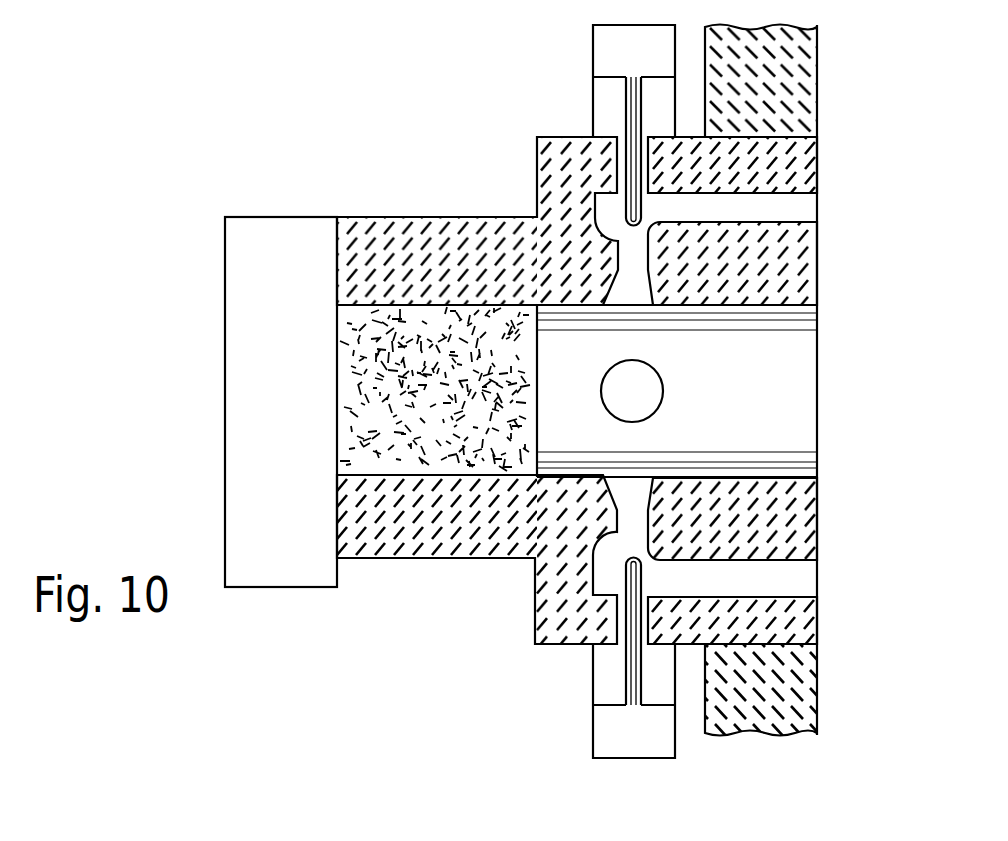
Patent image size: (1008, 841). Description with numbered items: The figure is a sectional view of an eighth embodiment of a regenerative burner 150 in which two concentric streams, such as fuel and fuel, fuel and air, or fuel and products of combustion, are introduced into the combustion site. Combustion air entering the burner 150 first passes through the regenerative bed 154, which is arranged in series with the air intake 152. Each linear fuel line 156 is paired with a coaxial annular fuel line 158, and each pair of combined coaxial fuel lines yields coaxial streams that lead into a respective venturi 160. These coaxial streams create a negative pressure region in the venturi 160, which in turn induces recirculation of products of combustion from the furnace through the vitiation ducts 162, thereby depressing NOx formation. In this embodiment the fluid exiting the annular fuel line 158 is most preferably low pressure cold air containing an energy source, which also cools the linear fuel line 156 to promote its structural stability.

The burner 150 is at (457, 208).
The air intake 152 is at (265, 577).
The regenerative bed 154 is at (395, 456).
The linear fuel line 156 is at (626, 106).
The annular fuel line 158 is at (617, 172).
The venturi 160 is at (653, 307).
The vitiation duct 162 is at (804, 214).